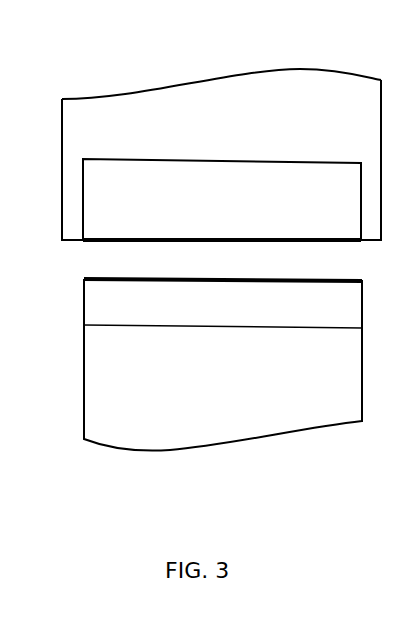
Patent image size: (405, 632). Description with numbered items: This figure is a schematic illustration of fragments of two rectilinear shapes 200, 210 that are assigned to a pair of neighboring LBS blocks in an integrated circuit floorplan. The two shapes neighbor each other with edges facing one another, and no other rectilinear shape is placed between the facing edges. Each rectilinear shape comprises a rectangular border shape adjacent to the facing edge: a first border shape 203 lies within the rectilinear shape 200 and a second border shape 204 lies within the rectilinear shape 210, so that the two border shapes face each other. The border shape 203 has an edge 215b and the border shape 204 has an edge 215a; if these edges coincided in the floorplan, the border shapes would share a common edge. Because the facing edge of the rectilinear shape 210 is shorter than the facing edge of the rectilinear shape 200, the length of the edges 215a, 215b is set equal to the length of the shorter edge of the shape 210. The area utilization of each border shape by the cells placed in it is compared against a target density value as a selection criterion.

The rectilinear shape 200 is at (162, 82).
The rectangular border shape 203 is at (222, 199).
The rectangular border shape 204 is at (223, 318).
The rectilinear shape 210 is at (233, 453).
The edge 215a is at (101, 282).
The edge 215b is at (93, 241).